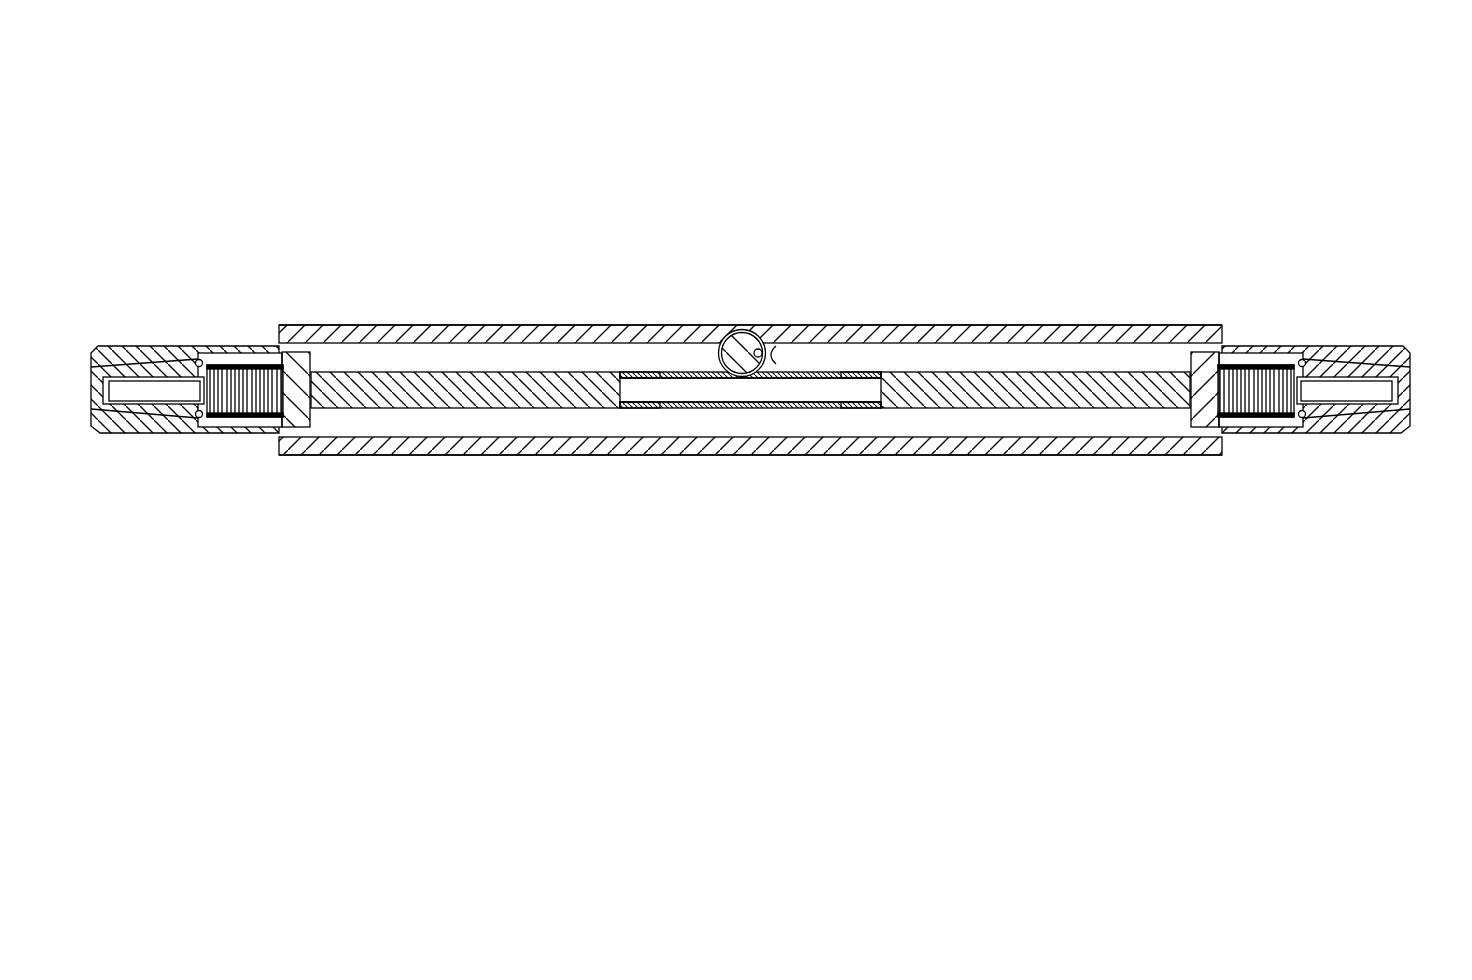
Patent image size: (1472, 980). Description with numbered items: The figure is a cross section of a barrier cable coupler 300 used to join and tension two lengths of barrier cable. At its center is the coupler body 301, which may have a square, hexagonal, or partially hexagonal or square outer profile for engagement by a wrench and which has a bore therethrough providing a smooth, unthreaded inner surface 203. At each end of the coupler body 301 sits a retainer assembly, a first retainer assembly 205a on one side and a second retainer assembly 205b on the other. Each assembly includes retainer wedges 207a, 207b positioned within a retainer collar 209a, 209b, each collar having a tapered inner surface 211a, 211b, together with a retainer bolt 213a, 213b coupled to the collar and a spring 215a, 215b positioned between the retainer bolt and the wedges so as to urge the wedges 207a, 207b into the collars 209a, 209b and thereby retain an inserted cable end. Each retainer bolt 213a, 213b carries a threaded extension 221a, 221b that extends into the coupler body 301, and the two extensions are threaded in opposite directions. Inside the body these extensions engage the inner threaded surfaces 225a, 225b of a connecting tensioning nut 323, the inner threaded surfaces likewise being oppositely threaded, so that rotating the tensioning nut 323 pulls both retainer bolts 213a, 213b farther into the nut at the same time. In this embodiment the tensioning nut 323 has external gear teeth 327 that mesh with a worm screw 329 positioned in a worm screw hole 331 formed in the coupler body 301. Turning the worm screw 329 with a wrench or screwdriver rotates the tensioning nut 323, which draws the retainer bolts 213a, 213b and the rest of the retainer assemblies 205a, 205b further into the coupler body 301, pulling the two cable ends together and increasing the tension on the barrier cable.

The barrier cable coupler 300 is at (456, 133).
The inner surface 203 is at (560, 360).
The coupler body 301 is at (488, 325).
The first retainer assembly 205a is at (237, 284).
The second retainer assembly 205b is at (1315, 300).
The retainer wedge 207a is at (170, 412).
The retainer wedge 207b is at (1317, 414).
The retainer collar 209a is at (185, 344).
The retainer collar 209b is at (1357, 348).
The tapered inner surface 211a is at (127, 401).
The tapered inner surface 211b is at (1350, 418).
The retainer bolt 213a is at (297, 418).
The retainer bolt 213b is at (1150, 408).
The spring 215a is at (228, 363).
The spring 215b is at (1270, 365).
The threaded extension 221a is at (382, 409).
The threaded extension 221b is at (1063, 408).
The inner threaded surface 225a is at (653, 409).
The inner threaded surface 225b is at (905, 409).
The tensioning nut 323 is at (866, 372).
The external gear teeth 327 is at (742, 409).
The worm screw 329 is at (744, 329).
The worm screw hole 331 is at (778, 349).